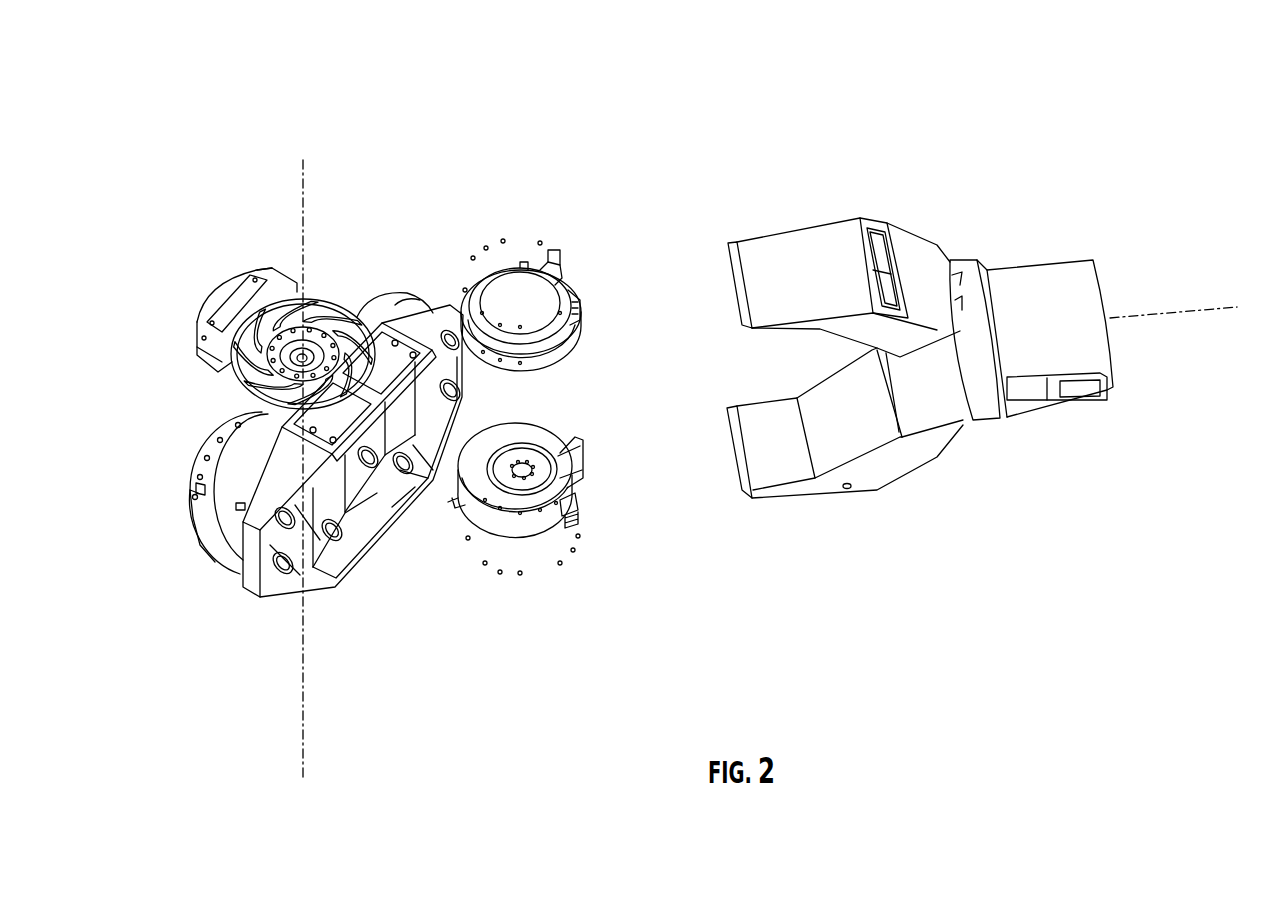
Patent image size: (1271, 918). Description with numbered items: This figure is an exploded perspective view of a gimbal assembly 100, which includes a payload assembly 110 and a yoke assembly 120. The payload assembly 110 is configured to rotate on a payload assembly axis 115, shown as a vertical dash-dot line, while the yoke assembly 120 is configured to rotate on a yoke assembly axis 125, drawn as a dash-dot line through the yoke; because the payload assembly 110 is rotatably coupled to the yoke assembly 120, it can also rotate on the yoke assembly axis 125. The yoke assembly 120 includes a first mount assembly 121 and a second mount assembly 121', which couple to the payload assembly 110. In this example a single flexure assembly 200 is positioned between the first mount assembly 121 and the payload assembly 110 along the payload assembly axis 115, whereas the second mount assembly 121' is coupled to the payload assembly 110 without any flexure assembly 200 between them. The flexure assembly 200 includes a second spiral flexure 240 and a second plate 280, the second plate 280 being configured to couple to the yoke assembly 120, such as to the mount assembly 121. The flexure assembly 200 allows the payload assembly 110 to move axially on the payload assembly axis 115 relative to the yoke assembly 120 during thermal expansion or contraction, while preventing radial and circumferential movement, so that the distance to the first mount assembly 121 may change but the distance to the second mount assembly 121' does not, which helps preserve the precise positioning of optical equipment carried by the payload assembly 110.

The gimbal assembly 100 is at (541, 131).
The payload assembly 110 is at (310, 623).
The payload assembly axis 115 is at (302, 197).
The yoke assembly 120 is at (796, 556).
The first mount assembly 121 is at (543, 294).
The second mount assembly 121' is at (514, 527).
The yoke assembly axis 125 is at (1197, 308).
The flexure assembly 200 is at (329, 286).
The second spiral flexure 240 is at (343, 300).
The second plate 280 is at (558, 488).